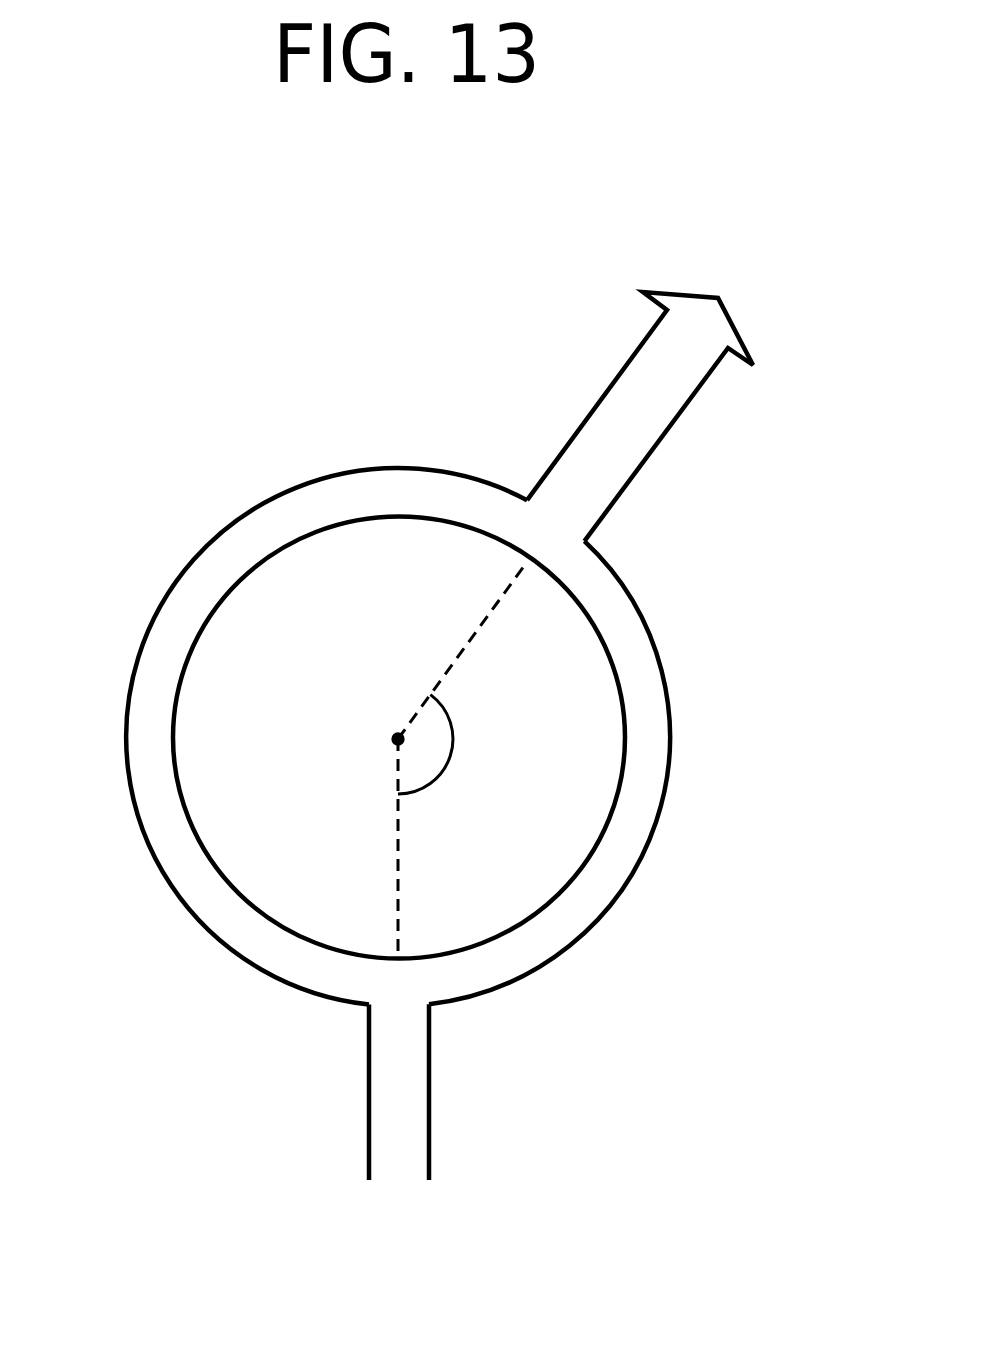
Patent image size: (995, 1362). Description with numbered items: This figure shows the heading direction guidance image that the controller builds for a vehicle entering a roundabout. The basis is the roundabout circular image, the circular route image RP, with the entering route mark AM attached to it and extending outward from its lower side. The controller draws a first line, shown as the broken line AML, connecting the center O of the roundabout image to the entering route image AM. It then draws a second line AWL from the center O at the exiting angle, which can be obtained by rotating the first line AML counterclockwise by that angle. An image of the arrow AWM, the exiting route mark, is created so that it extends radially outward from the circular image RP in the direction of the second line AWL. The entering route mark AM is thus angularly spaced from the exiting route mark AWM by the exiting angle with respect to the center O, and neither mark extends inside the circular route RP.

The circular route image RP is at (638, 635).
The exiting route mark AWM is at (615, 400).
The entering route mark AM is at (418, 1125).
The second line AWL is at (450, 665).
The first line AML is at (397, 851).
The center O is at (381, 741).